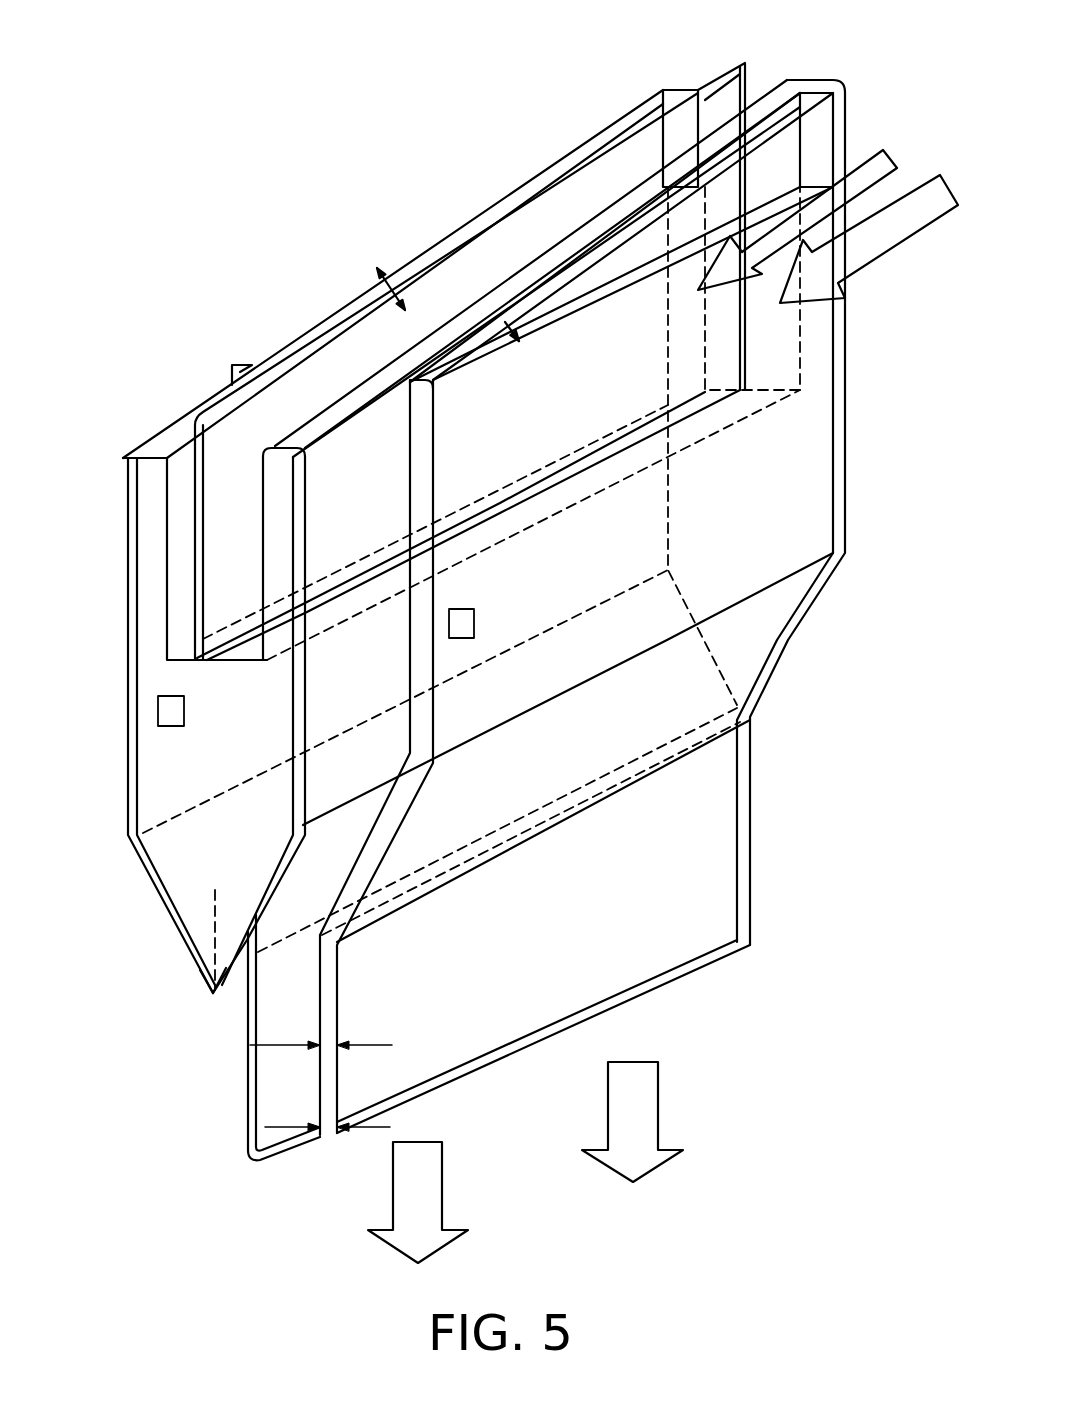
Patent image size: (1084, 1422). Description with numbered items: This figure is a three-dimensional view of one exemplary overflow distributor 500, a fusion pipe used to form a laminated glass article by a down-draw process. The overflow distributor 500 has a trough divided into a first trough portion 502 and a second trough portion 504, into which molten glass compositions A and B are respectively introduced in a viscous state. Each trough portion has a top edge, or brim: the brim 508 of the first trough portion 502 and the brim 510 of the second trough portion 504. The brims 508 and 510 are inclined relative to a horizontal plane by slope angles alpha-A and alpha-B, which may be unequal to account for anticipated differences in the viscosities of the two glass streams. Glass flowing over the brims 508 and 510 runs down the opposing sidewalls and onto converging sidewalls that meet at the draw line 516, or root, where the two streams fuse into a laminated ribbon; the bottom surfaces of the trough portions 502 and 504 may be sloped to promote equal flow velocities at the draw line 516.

The overflow distributor 500 is at (314, 262).
The first trough portion 502 is at (265, 546).
The second trough portion 504 is at (163, 532).
The brim 508 is at (780, 128).
The brim 510 is at (603, 130).
The draw line 516 is at (212, 993).